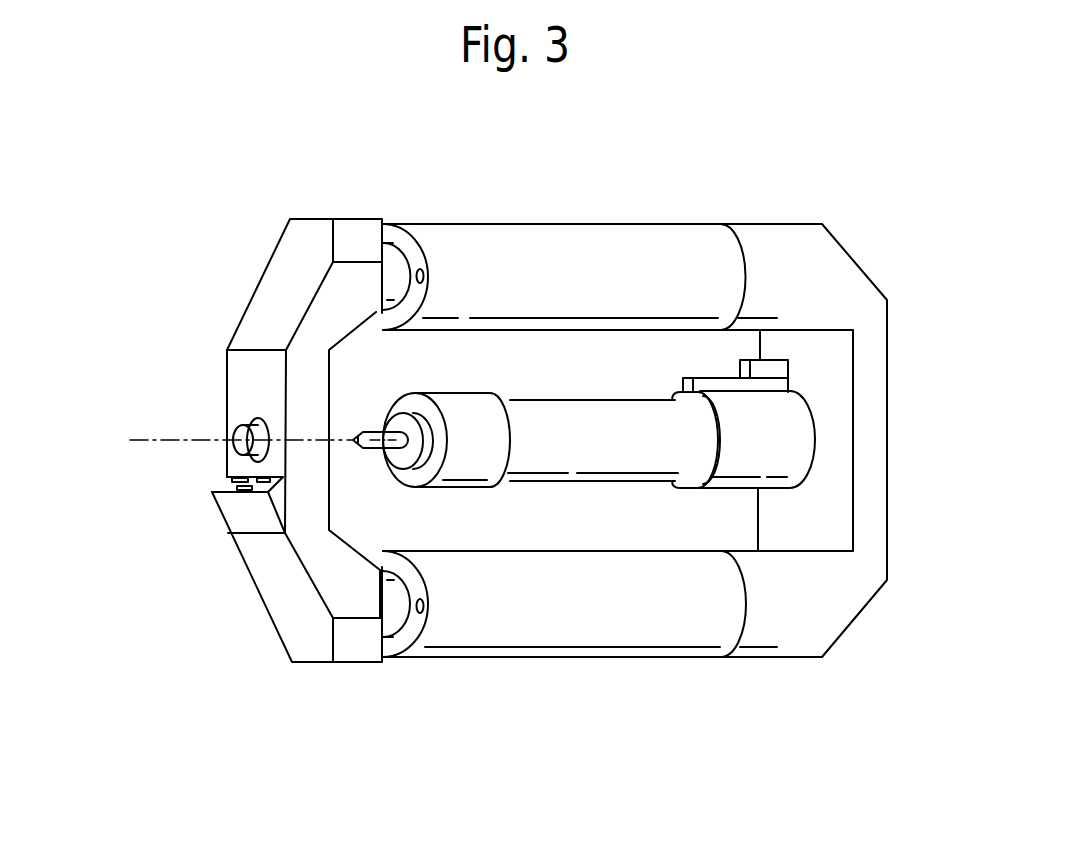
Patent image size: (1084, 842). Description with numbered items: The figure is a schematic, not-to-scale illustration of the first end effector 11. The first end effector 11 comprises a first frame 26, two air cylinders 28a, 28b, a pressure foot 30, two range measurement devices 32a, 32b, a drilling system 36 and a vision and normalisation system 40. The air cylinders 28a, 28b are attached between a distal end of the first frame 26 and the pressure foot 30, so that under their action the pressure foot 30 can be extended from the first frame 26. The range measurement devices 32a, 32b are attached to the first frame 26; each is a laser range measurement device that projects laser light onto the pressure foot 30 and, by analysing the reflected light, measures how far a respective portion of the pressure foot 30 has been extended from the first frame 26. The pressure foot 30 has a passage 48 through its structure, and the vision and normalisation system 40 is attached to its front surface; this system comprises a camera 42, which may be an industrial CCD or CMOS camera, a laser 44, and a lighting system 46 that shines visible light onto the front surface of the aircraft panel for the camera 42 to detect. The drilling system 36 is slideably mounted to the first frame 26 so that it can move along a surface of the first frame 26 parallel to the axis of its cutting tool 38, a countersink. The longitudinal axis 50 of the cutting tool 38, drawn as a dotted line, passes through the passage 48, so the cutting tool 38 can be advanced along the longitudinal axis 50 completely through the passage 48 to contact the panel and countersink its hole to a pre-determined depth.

The first end effector 11 is at (798, 195).
The first frame 26 is at (686, 246).
The air cylinder 28a is at (395, 245).
The air cylinder 28b is at (390, 640).
The pressure foot 30 is at (277, 279).
The range measurement device 32a is at (424, 274).
The range measurement device 32b is at (426, 607).
The drilling system 36 is at (461, 403).
The cutting tool 38 is at (373, 444).
The vision and normalisation system 40 is at (225, 507).
The camera 42 is at (222, 478).
The laser 44 is at (242, 491).
The lighting system 46 is at (258, 476).
The passage 48 is at (250, 425).
The longitudinal axis 50 is at (160, 437).